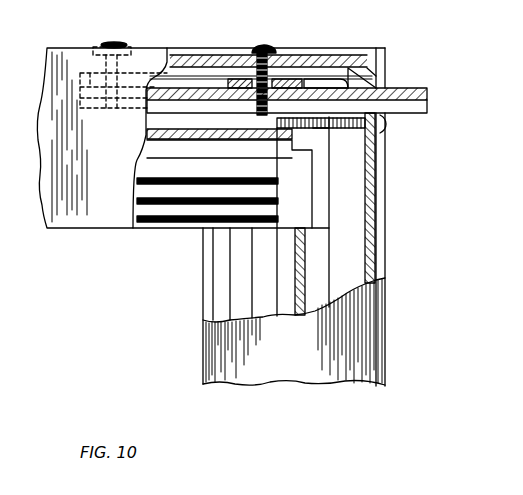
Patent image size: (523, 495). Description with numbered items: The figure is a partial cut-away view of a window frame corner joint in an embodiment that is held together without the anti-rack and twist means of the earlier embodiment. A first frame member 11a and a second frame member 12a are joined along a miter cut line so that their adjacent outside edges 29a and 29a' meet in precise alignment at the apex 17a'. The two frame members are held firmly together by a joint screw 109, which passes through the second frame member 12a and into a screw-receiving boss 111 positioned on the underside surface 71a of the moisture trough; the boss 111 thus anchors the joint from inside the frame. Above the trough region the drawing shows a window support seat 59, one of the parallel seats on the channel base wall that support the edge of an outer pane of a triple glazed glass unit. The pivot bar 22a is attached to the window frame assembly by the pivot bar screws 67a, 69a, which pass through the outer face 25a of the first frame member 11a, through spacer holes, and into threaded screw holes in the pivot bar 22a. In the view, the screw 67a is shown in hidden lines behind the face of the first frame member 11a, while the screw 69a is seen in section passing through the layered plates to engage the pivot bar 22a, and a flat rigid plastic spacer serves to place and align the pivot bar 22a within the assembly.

The first frame member 11a is at (77, 47).
The pivot bar screw 67a is at (115, 47).
The outer face 25a is at (217, 47).
The pivot bar screw 69a is at (265, 47).
The outside edge 29a is at (304, 54).
The apex 17a' is at (415, 205).
The outside edge 29a' is at (410, 217).
The pivot bar 22a is at (427, 99).
The joint screw 109 is at (383, 143).
The screw-receiving boss 111 is at (312, 129).
The underside surface 71a is at (147, 134).
The window support seat 59 is at (148, 150).
The second frame member 12a is at (386, 345).